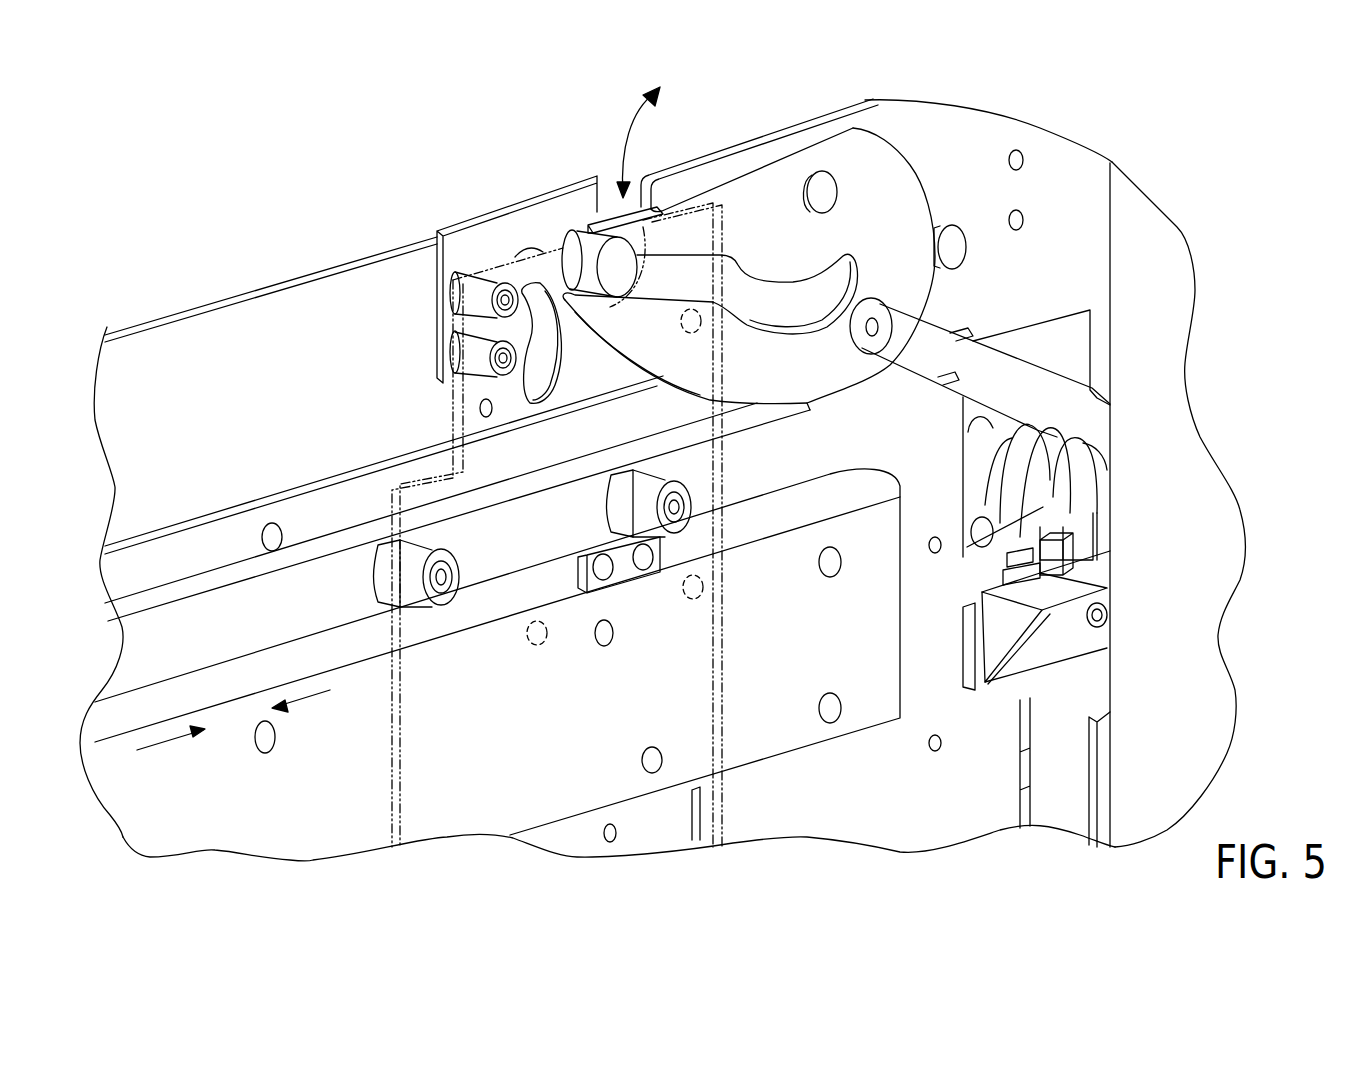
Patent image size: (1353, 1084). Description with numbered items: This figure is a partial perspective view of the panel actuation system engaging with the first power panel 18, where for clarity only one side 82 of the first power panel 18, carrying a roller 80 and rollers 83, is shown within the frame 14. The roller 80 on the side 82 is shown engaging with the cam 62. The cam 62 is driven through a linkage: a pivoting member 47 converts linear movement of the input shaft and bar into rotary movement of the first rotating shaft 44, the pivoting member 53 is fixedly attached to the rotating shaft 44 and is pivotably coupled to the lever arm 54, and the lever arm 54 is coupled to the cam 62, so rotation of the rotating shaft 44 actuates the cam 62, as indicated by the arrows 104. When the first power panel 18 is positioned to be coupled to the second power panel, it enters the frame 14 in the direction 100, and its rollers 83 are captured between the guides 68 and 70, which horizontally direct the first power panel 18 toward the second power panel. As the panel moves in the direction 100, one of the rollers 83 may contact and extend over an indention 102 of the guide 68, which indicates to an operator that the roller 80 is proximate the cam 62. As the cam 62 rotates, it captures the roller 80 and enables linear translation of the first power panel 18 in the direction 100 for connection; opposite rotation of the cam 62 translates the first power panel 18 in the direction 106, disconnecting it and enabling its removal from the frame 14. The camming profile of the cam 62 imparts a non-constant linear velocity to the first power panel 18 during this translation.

The frame 14 is at (157, 357).
The first power panel 18 is at (445, 412).
The first rotating shaft 44 is at (1083, 478).
The pivoting member 47 is at (983, 500).
The pivoting member 53 is at (1037, 507).
The lever arm 54 is at (1000, 377).
The cam 62 is at (767, 207).
The guide 68 is at (157, 812).
The guide 70 is at (183, 557).
The roller 80 is at (617, 270).
The side 82 is at (447, 742).
The rollers 83 is at (380, 580).
The direction 100 is at (160, 745).
The indention 102 is at (627, 573).
The arrows 104 is at (623, 140).
The direction 106 is at (307, 697).